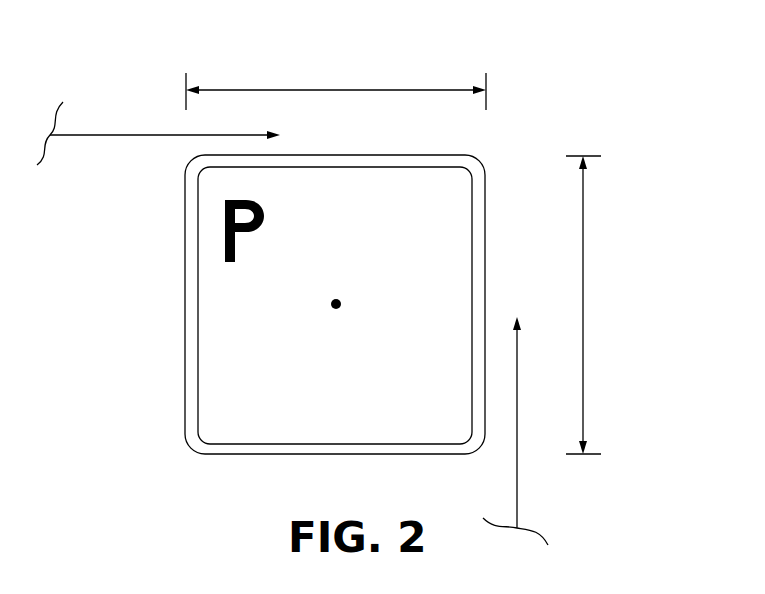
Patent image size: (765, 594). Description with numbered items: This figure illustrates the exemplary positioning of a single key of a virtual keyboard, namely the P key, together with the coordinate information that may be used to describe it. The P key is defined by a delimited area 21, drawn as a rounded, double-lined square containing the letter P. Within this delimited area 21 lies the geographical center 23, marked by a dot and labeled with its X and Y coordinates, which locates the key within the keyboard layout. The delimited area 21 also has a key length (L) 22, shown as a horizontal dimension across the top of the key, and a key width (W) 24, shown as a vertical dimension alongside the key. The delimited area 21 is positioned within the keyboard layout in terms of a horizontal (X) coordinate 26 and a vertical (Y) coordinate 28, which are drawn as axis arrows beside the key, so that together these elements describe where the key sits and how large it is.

The delimited area 21 is at (477, 157).
The key length (L) 22 is at (397, 90).
The geographical center 23 is at (340, 300).
The key width (W) 24 is at (583, 217).
The horizontal (X) coordinate 26 is at (90, 135).
The vertical (Y) coordinate 28 is at (517, 473).